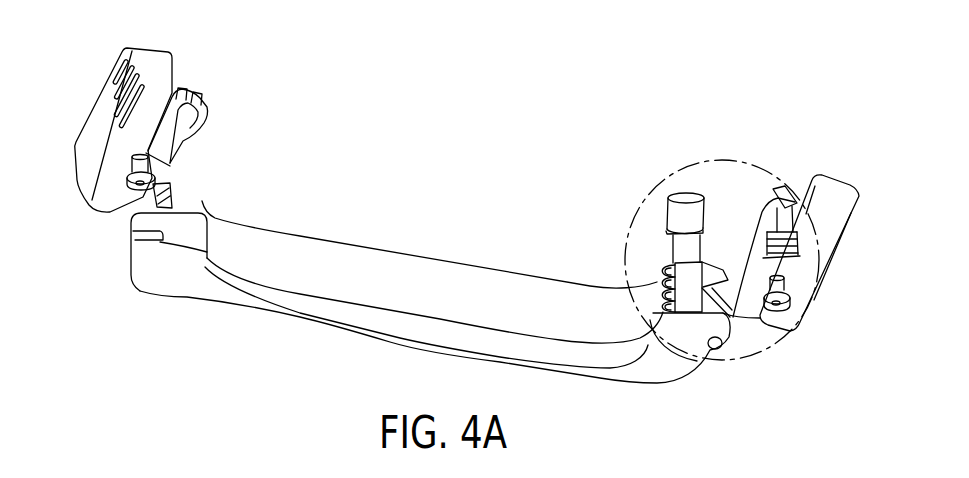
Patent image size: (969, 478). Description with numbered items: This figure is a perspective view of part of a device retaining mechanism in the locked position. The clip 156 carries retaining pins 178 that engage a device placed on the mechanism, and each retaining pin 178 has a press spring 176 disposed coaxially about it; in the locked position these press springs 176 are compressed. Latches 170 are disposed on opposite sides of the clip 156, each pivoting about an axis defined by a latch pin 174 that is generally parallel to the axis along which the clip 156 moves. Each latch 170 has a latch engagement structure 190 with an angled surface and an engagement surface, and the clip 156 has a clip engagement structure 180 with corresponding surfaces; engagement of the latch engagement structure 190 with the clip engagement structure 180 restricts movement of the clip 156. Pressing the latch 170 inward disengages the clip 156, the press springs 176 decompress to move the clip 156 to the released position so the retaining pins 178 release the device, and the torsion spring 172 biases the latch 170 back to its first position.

The clip 156 is at (292, 307).
The latch 170 is at (83, 164).
The torsion spring 172 is at (200, 108).
The latch pin 174 is at (139, 188).
The press spring 176 is at (656, 288).
The retaining pin 178 is at (182, 103).
The clip engagement structure 180 is at (715, 275).
The latch engagement structure 190 is at (728, 318).